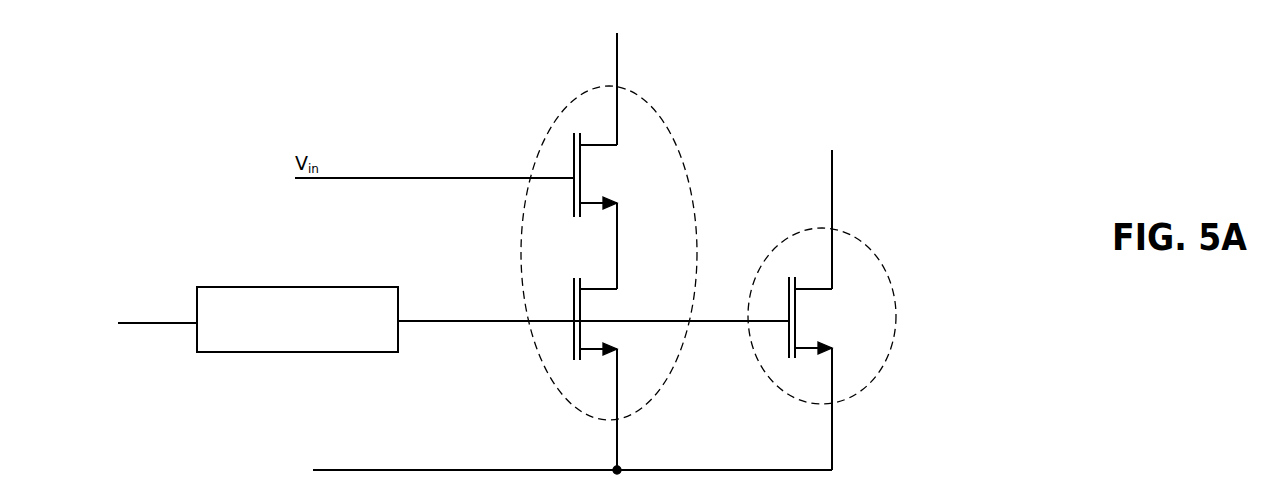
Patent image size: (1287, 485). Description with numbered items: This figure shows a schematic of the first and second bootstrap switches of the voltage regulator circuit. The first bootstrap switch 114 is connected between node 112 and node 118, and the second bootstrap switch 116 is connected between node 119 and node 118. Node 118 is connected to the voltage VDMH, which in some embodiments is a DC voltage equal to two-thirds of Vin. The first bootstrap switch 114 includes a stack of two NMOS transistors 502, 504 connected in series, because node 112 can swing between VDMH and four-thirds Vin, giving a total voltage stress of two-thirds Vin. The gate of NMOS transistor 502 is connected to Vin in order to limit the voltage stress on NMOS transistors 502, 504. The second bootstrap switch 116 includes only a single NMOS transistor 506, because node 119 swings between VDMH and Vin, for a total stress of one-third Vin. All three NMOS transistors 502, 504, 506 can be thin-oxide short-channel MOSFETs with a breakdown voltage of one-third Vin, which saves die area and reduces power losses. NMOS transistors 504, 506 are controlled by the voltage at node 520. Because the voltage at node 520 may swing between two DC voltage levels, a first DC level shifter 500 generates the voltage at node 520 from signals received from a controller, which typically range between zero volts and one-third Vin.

The node 112 is at (617, 40).
The first bootstrap switch 114 is at (548, 132).
The second bootstrap switch 116 is at (820, 228).
The node 118 is at (515, 470).
The node 119 is at (832, 168).
The first DC level shifter 500 is at (285, 287).
The NMOS transistor 502 is at (612, 176).
The NMOS transistor 504 is at (619, 298).
The NMOS transistor 506 is at (824, 313).
The node 520 is at (440, 321).